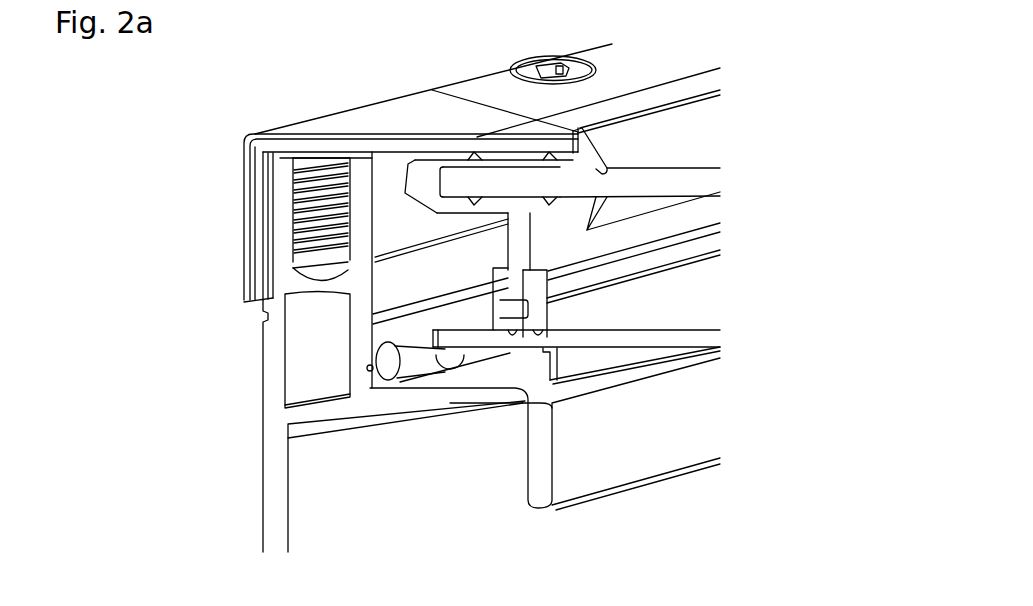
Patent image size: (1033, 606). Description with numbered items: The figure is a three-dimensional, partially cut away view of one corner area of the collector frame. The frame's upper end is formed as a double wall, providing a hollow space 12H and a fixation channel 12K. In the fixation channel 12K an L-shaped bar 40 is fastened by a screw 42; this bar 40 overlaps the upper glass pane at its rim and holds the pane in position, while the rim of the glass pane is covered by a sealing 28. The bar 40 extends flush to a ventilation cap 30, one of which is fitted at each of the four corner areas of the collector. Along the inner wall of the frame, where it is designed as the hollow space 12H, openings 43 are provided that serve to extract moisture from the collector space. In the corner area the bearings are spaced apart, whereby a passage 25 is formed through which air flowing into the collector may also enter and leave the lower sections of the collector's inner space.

The ventilation cap 30 is at (347, 126).
The L-shaped bar 40 is at (492, 88).
The screw 42 is at (526, 73).
The sealing 28 is at (430, 177).
The fixation channel 12K is at (292, 222).
The hollow space 12H is at (302, 325).
The openings 43 is at (383, 360).
The passage 25 is at (518, 378).